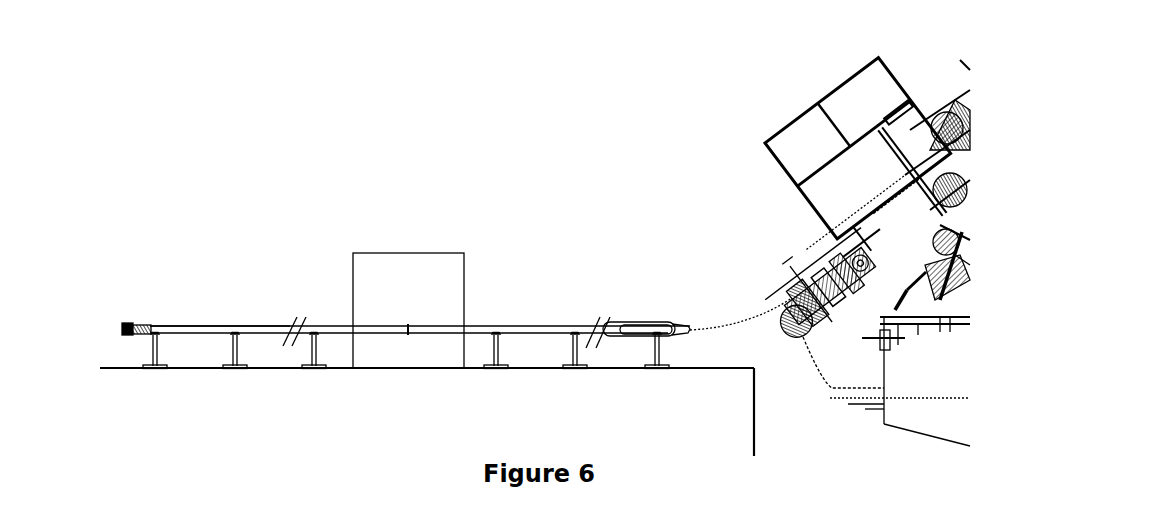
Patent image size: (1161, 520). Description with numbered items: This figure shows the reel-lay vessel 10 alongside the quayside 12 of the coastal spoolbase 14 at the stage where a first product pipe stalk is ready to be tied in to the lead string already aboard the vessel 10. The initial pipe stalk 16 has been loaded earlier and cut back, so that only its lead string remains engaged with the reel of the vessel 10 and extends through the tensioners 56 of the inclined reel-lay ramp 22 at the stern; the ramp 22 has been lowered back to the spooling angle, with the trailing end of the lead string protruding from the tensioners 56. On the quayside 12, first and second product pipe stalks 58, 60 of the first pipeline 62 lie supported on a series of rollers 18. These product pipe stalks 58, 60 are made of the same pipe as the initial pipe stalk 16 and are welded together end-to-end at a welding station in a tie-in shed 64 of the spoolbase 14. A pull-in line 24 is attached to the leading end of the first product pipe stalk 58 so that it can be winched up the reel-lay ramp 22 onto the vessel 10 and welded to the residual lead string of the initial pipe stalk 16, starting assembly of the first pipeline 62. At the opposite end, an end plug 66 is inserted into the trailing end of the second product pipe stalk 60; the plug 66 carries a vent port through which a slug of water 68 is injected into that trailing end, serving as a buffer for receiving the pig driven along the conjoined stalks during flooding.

The reel-lay vessel 10 is at (738, 138).
The quayside 12 is at (756, 406).
The coastal spoolbase 14 is at (505, 188).
The initial pipe stalk 16 is at (887, 204).
The rollers 18 is at (234, 341).
The reel-lay ramp 22 is at (799, 267).
The pull-in line 24 is at (733, 320).
The tensioners 56 is at (961, 112).
The first product pipe stalk 58 is at (531, 325).
The second product pipe stalk 60 is at (185, 325).
The first pipeline 62 is at (270, 300).
The tie-in shed 64 is at (382, 252).
The end plug 66 is at (123, 326).
The slug of water 68 is at (141, 324).